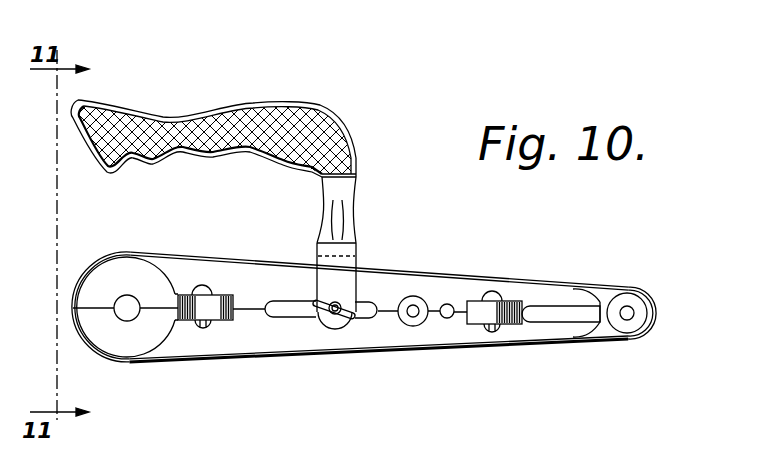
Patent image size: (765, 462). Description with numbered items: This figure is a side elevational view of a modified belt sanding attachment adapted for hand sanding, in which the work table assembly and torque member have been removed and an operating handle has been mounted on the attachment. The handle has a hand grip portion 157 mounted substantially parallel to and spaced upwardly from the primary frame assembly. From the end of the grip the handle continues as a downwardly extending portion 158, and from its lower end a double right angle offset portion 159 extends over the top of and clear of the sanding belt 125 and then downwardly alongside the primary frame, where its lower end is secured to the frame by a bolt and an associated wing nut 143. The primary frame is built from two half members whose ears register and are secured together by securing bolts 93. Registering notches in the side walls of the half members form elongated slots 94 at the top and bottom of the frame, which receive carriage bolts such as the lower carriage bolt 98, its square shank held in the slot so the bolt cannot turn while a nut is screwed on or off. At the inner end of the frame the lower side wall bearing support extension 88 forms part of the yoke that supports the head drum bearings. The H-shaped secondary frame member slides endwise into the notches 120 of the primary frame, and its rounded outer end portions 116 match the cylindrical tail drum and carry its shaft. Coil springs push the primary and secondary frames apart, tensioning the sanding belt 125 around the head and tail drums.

The lower side wall bearing support extension 88 is at (122, 267).
The securing bolts 93 is at (213, 330).
The elongated slots 94 is at (302, 318).
The carriage bolt 98 is at (330, 320).
The outer end portions of the secondary frame member 116 is at (642, 310).
The endwise notches 120 is at (538, 310).
The sanding belt 125 is at (205, 262).
The wing nut 143 is at (355, 305).
The hand grip portion 157 is at (333, 140).
The downwardly extending portion 158 is at (348, 196).
The double right angle offset portion 159 is at (352, 253).